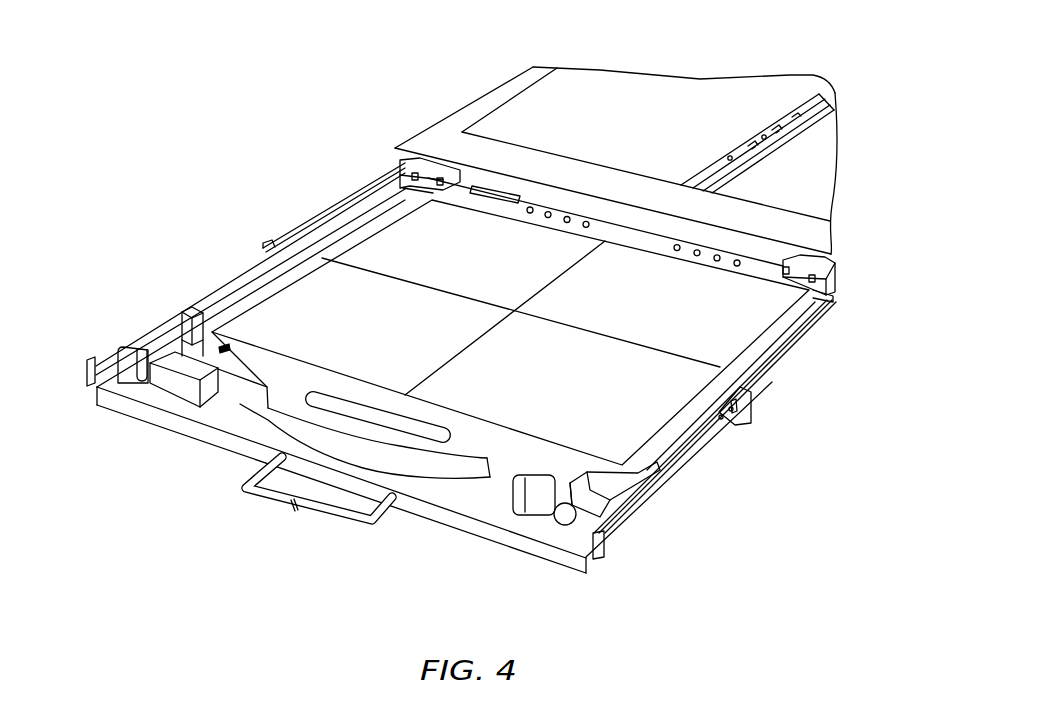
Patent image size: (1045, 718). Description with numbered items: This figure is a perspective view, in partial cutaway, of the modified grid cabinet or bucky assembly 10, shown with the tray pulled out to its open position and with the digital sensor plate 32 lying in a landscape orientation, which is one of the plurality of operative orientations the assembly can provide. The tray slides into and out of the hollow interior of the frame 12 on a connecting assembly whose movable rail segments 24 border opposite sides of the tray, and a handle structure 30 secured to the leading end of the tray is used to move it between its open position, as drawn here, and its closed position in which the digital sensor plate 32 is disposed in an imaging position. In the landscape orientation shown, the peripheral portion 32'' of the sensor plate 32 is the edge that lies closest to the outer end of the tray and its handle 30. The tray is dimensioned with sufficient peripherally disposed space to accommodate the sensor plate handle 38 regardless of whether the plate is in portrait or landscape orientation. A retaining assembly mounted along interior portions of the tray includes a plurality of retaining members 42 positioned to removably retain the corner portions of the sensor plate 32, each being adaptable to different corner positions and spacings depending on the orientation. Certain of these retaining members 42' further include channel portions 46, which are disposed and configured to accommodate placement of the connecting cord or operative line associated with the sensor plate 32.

The modified grid cabinet or bucky assembly 10 is at (300, 150).
The frame 12 is at (477, 75).
The movable rail segments 24 is at (337, 206).
The handle structure 30 is at (347, 530).
The digital sensor plate 32 is at (510, 332).
The peripheral portion of the sensor plate 32'' is at (452, 398).
The sensor plate handle 38 is at (455, 453).
The retaining members 42 is at (619, 211).
The retaining members with channel portions 42' is at (414, 394).
The channel portions 46 is at (150, 357).